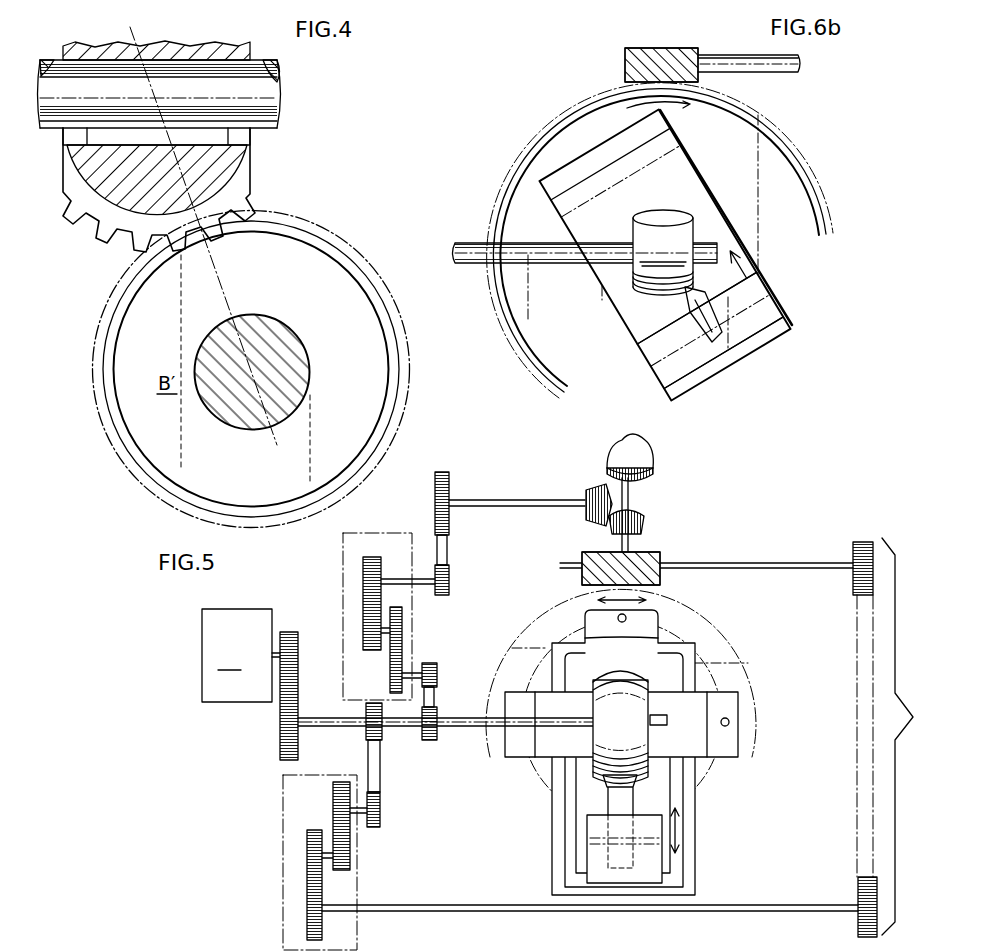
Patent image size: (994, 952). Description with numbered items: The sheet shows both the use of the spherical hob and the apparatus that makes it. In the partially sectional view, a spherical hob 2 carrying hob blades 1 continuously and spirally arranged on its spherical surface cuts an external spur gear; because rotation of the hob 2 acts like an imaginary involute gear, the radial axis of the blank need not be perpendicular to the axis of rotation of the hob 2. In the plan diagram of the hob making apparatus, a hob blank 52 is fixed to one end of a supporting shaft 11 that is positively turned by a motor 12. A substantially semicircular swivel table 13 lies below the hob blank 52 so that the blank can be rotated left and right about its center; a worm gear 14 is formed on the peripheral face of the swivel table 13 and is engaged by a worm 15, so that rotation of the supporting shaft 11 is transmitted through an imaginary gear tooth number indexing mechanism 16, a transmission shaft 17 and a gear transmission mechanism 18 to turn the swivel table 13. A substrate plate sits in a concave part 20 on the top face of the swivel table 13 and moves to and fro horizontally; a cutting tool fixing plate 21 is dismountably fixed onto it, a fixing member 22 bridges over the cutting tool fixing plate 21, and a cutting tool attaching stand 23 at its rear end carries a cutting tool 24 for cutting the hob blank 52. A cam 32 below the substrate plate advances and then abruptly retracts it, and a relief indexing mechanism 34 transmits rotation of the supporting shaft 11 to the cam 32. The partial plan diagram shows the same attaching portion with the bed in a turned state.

In FIG. 4, the hob blade 1 is at (262, 196).
In FIG. 4, the spherical hob 2 is at (275, 76).
In FIG. 6B, the supporting shaft 11 is at (551, 264).
In FIG. 5, the supporting shaft 11 is at (458, 717).
In FIG. 5, the motor 12 is at (241, 655).
In FIG. 6B, the swivel table 13 is at (795, 170).
In FIG. 5, the swivel table 13 is at (560, 608).
In FIG. 6B, the worm gear 14 is at (784, 120).
In FIG. 5, the worm gear 14 is at (513, 645).
In FIG. 6B, the worm 15 is at (697, 48).
In FIG. 5, the worm 15 is at (656, 552).
In FIG. 5, the imaginary gear tooth number indexing mechanism 16 is at (357, 890).
In FIG. 5, the transmission shaft 17 is at (463, 905).
In FIG. 5, the gear transmission mechanism 18 is at (795, 737).
In FIG. 6B, the concave part 20 is at (663, 123).
In FIG. 5, the concave part 20 is at (692, 648).
In FIG. 6B, the cutting tool fixing plate 21 is at (705, 207).
In FIG. 5, the cutting tool fixing plate 21 is at (662, 788).
In FIG. 5, the fixing member 22 is at (553, 758).
In FIG. 6B, the cutting tool attaching stand 23 is at (775, 312).
In FIG. 5, the cutting tool attaching stand 23 is at (655, 867).
In FIG. 6B, the cutting tool 24 is at (685, 302).
In FIG. 5, the cutting tool 24 is at (610, 803).
In FIG. 5, the cam 32 is at (645, 460).
In FIG. 5, the relief indexing mechanism 34 is at (343, 566).
In FIG. 6B, the hob blank 52 is at (661, 212).
In FIG. 5, the hob blank 52 is at (645, 704).